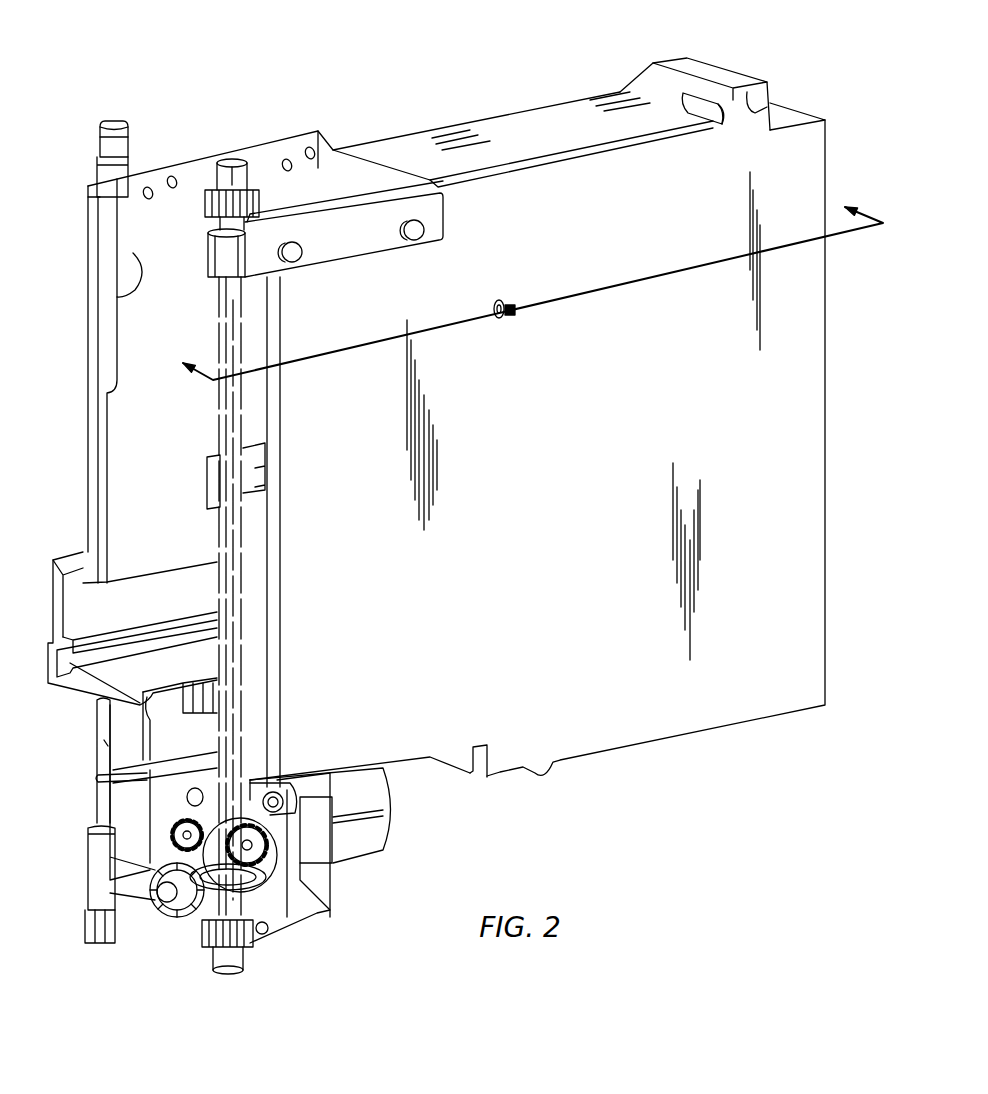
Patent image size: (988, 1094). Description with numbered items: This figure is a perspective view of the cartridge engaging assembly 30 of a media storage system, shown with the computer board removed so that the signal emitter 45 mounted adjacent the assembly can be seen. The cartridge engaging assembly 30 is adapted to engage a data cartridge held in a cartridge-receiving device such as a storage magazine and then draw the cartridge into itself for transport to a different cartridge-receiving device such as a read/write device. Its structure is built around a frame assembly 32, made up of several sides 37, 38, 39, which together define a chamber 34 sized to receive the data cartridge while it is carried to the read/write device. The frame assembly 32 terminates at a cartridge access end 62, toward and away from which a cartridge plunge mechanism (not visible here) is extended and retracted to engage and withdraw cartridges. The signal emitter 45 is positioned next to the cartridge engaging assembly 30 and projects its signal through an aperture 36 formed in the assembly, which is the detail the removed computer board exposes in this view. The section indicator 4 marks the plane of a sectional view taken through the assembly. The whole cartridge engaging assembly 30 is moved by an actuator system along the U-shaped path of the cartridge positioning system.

The cartridge engaging assembly 30 is at (210, 47).
The frame assembly 32 is at (752, 487).
The chamber 34 is at (150, 353).
The aperture 36 is at (505, 298).
The side 37 is at (450, 122).
The side 38 is at (140, 293).
The side 39 is at (581, 484).
The signal emitter 45 is at (517, 313).
The cartridge access end 62 is at (83, 473).
The section line 4- 4 is at (533, 309).